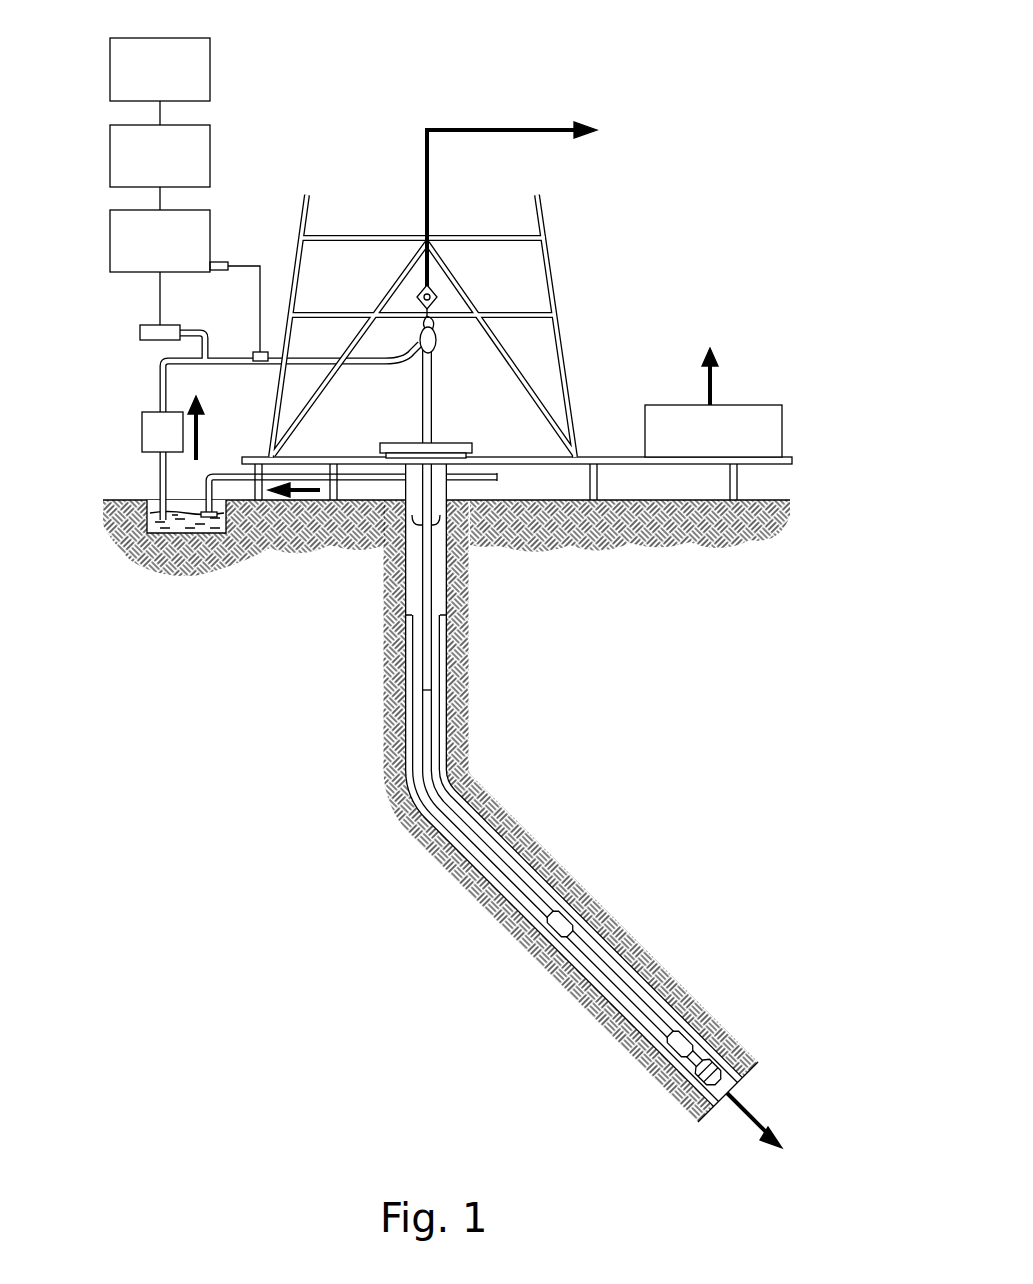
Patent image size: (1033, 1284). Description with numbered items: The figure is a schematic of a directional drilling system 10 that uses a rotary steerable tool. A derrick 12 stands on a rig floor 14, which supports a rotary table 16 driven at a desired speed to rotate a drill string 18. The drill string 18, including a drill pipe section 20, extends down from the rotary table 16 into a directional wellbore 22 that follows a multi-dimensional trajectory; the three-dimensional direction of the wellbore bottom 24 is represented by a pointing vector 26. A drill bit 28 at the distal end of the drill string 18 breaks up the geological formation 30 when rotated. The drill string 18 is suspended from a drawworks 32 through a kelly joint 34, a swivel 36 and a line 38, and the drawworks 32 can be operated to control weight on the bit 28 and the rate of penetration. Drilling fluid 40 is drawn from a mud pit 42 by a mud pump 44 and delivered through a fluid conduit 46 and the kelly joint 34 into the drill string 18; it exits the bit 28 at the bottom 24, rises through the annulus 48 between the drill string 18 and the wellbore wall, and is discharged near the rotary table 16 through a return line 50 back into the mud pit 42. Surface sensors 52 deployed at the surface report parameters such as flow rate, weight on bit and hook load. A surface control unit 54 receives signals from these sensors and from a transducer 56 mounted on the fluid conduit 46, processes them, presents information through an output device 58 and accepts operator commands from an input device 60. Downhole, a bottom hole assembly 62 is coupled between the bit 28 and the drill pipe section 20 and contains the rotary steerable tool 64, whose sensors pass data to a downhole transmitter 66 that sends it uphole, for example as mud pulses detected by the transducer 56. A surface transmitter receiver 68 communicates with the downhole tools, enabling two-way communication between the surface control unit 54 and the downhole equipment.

The directional drilling system 10 is at (655, 49).
The derrick 12 is at (548, 272).
The rig floor 14 is at (585, 455).
The rotary table 16 is at (450, 443).
The drill string 18 is at (580, 749).
The drill pipe section 20 is at (434, 650).
The directional wellbore 22 is at (430, 802).
The wellbore bottom 24 is at (700, 1100).
The pointing vector 26 is at (768, 1116).
The drill bit 28 is at (738, 1068).
The geological formation 30 is at (545, 944).
The drawworks 32 is at (745, 405).
The kelly joint 34 is at (433, 385).
The swivel 36 is at (415, 347).
The line 38 is at (430, 188).
The drilling fluid 40 is at (150, 505).
The mud pit 42 is at (190, 528).
The mud pump 44 is at (142, 424).
The fluid conduit 46 is at (225, 366).
The annulus 48 is at (480, 832).
The return line 50 is at (367, 482).
The surface sensors 52 is at (498, 493).
The surface control unit 54 is at (110, 237).
The transducer 56 is at (254, 354).
The output device 58 is at (110, 152).
The input device 60 is at (110, 67).
The bottom hole assembly 62 is at (700, 973).
The rotary steerable tool 64 is at (598, 1012).
The downhole transmitter 66 is at (540, 893).
The surface transmitter receiver 68 is at (140, 331).